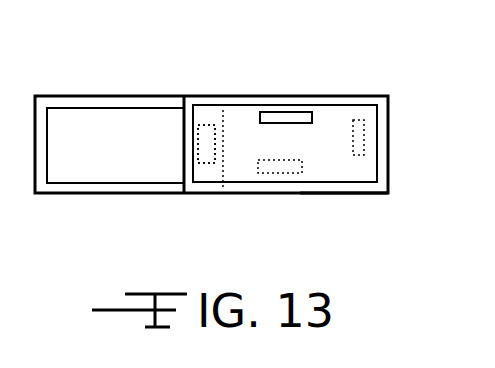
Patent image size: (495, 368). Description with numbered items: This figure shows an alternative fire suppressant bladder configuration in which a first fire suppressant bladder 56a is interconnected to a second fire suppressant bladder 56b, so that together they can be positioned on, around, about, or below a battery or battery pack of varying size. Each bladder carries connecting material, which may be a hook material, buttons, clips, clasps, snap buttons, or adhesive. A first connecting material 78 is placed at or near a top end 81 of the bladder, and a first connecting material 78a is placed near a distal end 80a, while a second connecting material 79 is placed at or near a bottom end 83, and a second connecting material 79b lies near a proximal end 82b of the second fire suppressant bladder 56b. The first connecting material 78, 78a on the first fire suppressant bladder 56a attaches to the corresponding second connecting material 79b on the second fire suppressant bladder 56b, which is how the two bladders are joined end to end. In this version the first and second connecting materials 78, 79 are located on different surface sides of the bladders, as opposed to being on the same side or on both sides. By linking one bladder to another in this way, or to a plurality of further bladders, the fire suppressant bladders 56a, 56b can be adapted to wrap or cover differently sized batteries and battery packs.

The first fire suppressant bladder 56a is at (279, 96).
The second fire suppressant bladder 56b is at (86, 96).
The first connecting material 78 is at (312, 113).
The first connecting material 78a is at (206, 167).
The second connecting material 79 is at (272, 176).
The second connecting material 79b is at (218, 198).
The distal end 80a is at (182, 153).
The top end 81 is at (377, 96).
The proximal end 82b is at (222, 135).
The bottom end 83 is at (310, 194).